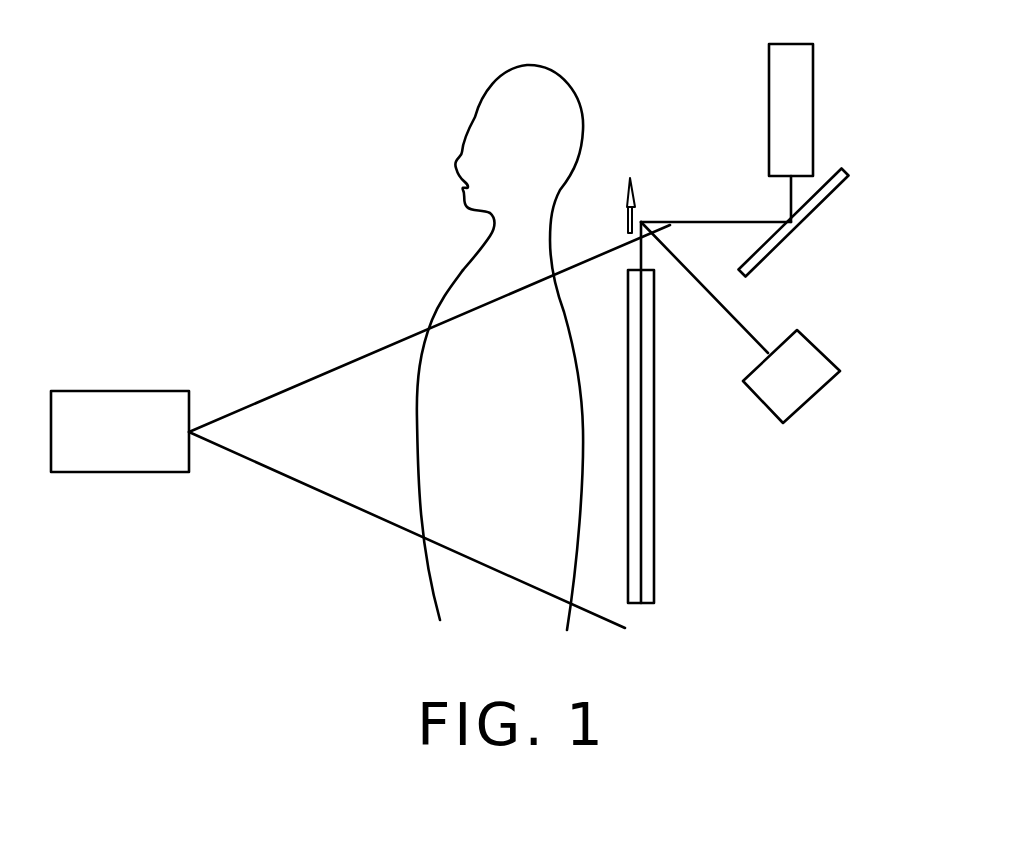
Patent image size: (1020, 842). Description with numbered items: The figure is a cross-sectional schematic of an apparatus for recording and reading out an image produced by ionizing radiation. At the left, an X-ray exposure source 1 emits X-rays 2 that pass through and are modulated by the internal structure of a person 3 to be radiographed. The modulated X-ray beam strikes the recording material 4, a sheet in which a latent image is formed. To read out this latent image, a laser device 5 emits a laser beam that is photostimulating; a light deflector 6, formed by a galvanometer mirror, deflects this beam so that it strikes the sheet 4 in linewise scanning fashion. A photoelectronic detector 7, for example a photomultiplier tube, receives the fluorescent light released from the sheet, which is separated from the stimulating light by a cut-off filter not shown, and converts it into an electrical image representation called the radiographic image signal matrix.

The X-ray exposure source 1 is at (90, 391).
The X-rays 2 is at (290, 389).
The person 3 is at (445, 291).
The recording material 4 is at (654, 512).
The laser device 5 is at (813, 66).
The light deflector 6 is at (826, 200).
The photoelectronic detector 7 is at (828, 385).